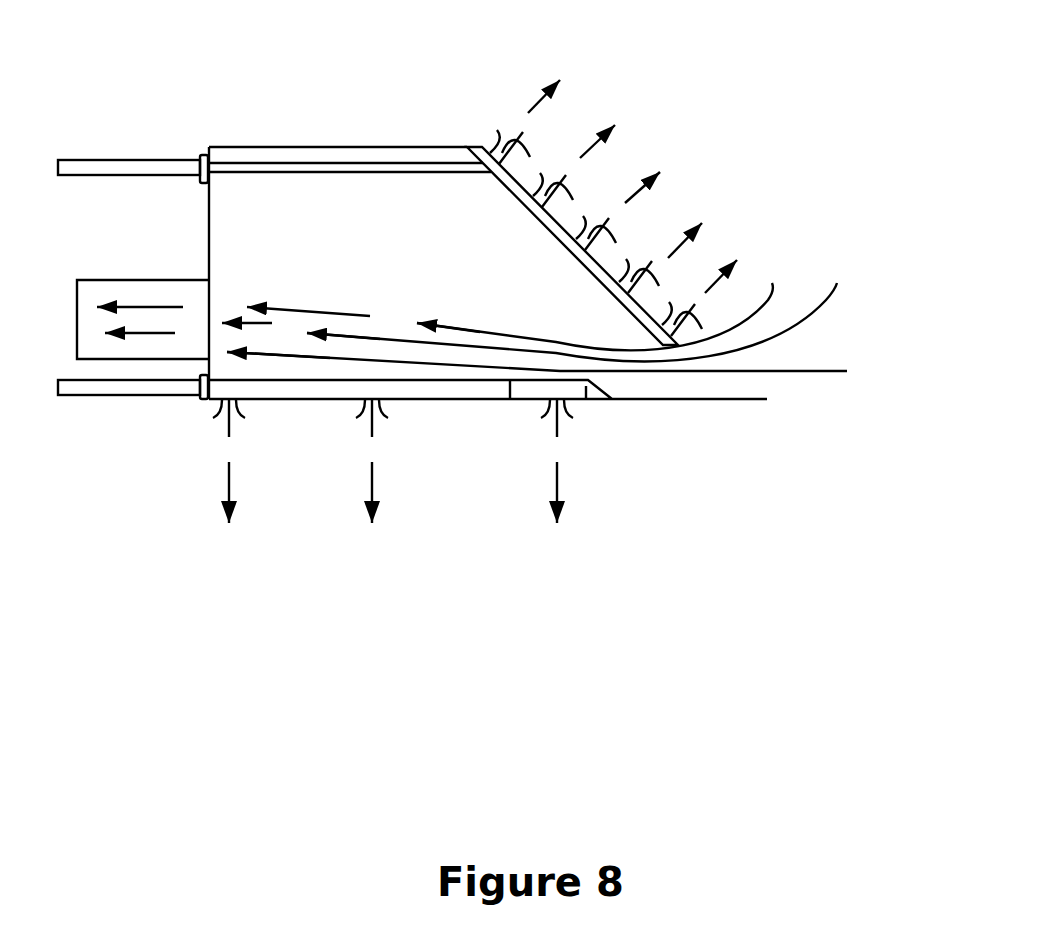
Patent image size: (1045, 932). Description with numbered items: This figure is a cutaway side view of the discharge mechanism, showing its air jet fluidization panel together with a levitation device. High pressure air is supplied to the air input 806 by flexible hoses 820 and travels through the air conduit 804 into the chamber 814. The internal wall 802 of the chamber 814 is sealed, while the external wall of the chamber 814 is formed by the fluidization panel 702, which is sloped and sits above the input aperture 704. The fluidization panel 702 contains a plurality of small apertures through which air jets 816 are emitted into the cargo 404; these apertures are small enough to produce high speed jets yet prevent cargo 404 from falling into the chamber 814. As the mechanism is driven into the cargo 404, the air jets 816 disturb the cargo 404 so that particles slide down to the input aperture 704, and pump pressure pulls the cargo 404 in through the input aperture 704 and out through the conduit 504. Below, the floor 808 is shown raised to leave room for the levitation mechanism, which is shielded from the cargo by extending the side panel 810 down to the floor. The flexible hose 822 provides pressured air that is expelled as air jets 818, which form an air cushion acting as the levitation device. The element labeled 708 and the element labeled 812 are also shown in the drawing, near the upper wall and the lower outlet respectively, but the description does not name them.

The cargo 404 is at (857, 302).
The conduit 504 is at (185, 280).
The fluidization panel 702 is at (557, 223).
The input aperture 704 is at (758, 387).
The upper housing wall 708 is at (338, 147).
The internal wall 802 is at (514, 198).
The air conduit 804 is at (370, 172).
The air input 806 is at (205, 153).
The floor 808 is at (510, 399).
The side panel 810 is at (281, 400).
The outlet slot 812 is at (586, 399).
The chamber 814 is at (571, 250).
The air jets 816 is at (543, 42).
The air jets 818 is at (187, 398).
The flexible hoses 820 is at (160, 162).
The flexible hose 822 is at (135, 390).